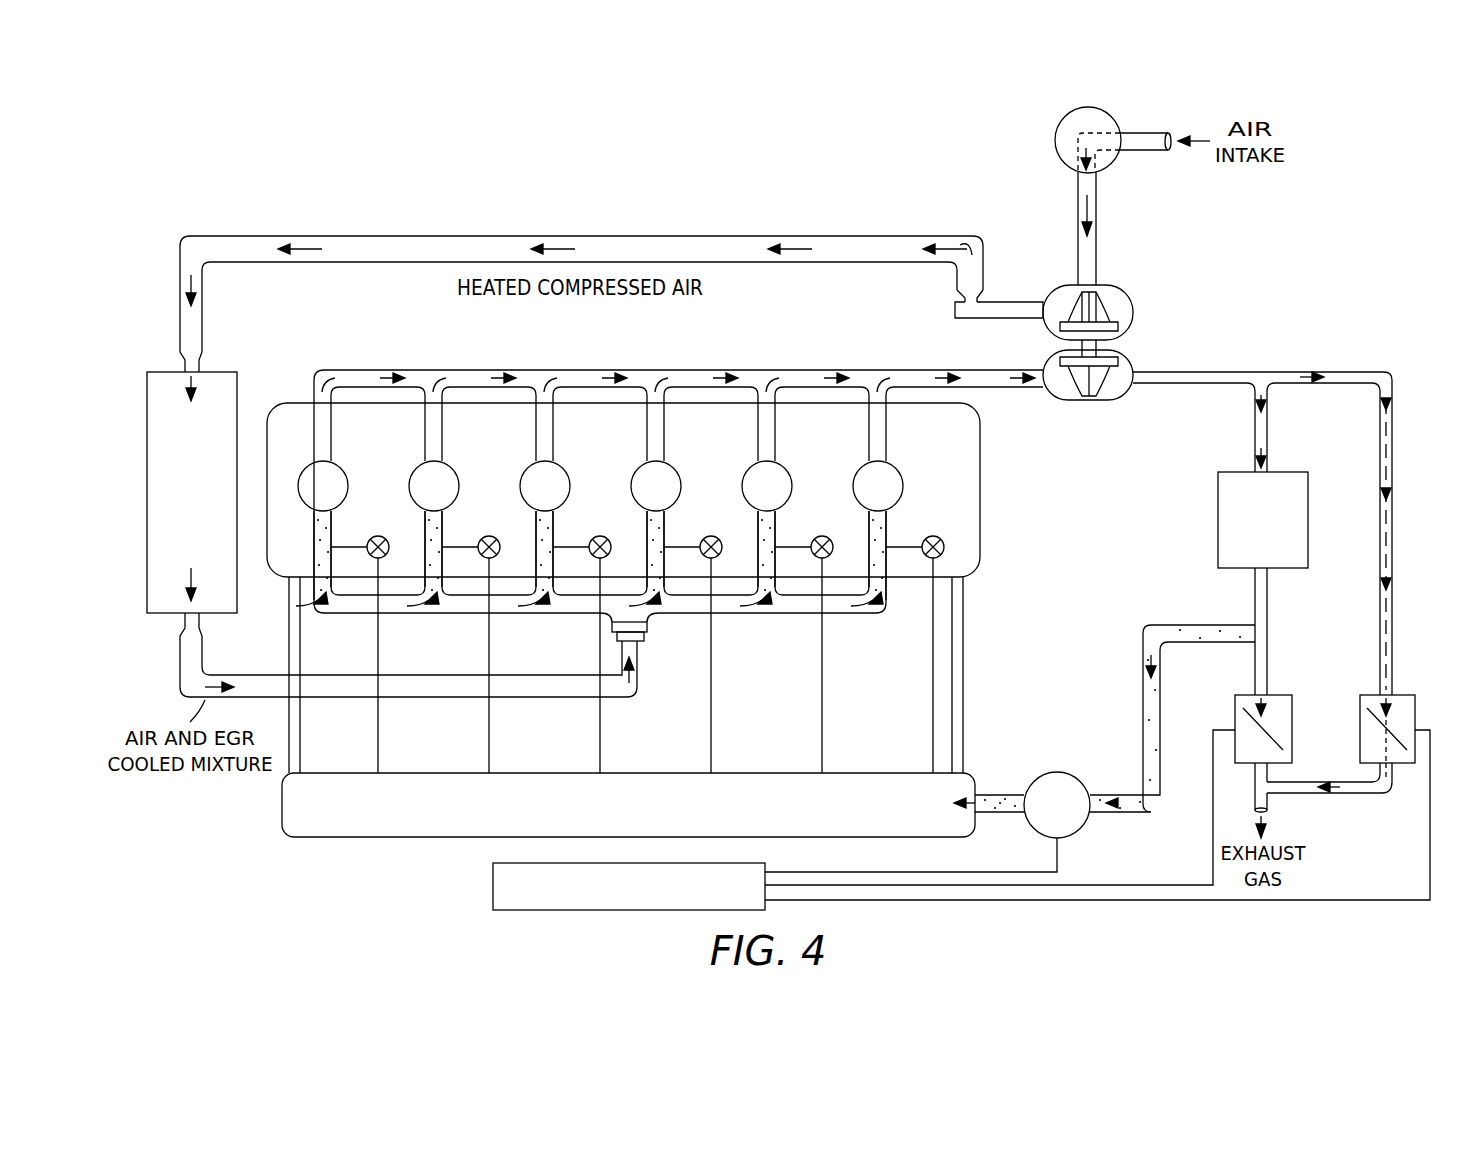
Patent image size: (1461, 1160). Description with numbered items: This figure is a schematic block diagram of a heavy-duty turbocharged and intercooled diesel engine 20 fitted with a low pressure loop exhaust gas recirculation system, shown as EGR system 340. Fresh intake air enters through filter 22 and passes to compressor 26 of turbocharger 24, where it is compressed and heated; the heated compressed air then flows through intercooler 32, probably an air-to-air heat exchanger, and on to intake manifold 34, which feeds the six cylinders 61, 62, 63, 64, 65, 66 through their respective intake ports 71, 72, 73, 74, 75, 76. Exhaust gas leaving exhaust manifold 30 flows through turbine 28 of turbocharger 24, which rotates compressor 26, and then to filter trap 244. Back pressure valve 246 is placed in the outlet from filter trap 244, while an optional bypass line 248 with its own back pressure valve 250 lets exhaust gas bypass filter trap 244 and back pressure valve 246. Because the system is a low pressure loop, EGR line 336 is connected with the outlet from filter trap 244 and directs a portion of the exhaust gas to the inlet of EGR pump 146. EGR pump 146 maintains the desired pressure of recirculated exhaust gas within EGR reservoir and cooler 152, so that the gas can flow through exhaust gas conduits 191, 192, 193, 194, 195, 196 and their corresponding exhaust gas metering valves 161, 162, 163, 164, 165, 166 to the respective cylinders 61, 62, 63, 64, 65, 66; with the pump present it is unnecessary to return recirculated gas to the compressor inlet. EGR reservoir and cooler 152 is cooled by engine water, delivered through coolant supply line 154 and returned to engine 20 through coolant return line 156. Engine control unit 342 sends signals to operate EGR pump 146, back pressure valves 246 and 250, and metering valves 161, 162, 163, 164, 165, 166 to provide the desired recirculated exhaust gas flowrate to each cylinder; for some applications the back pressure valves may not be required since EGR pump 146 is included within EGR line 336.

The engine 20 is at (1012, 484).
The filter 22 is at (1055, 145).
The turbocharger 24 is at (1150, 340).
The compressor 26 is at (1125, 292).
The turbine 28 is at (1105, 400).
The exhaust manifold 30 is at (833, 368).
The intercooler 32 is at (160, 370).
The intake manifold 34 is at (764, 615).
The cylinder 61 is at (343, 464).
The cylinder 62 is at (454, 464).
The cylinder 63 is at (565, 464).
The cylinder 64 is at (676, 464).
The cylinder 65 is at (787, 464).
The cylinder 66 is at (898, 464).
The intake port 71 is at (314, 522).
The intake port 72 is at (425, 522).
The intake port 73 is at (536, 522).
The intake port 74 is at (647, 522).
The intake port 75 is at (758, 522).
The intake port 76 is at (869, 522).
The EGR pump 146 is at (1082, 832).
The EGR reservoir and cooler 152 is at (352, 840).
The coolant supply line 154 is at (287, 636).
The coolant return line 156 is at (965, 644).
The exhaust gas metering valve 161 is at (376, 535).
The exhaust gas metering valve 162 is at (487, 535).
The exhaust gas metering valve 163 is at (598, 535).
The exhaust gas metering valve 164 is at (709, 535).
The exhaust gas metering valve 165 is at (820, 535).
The exhaust gas metering valve 166 is at (931, 535).
The exhaust gas conduit 191 is at (378, 728).
The exhaust gas conduit 192 is at (489, 728).
The exhaust gas conduit 193 is at (600, 728).
The exhaust gas conduit 194 is at (711, 728).
The exhaust gas conduit 195 is at (822, 728).
The exhaust gas conduit 196 is at (930, 662).
The filter trap 244 is at (1216, 518).
The back pressure valve 246 is at (1282, 694).
The bypass line 248 is at (1385, 370).
The back pressure valve 250 is at (1405, 694).
The EGR line 336 is at (1165, 688).
The EGR system 340 is at (1172, 825).
The engine control unit 342 is at (492, 883).